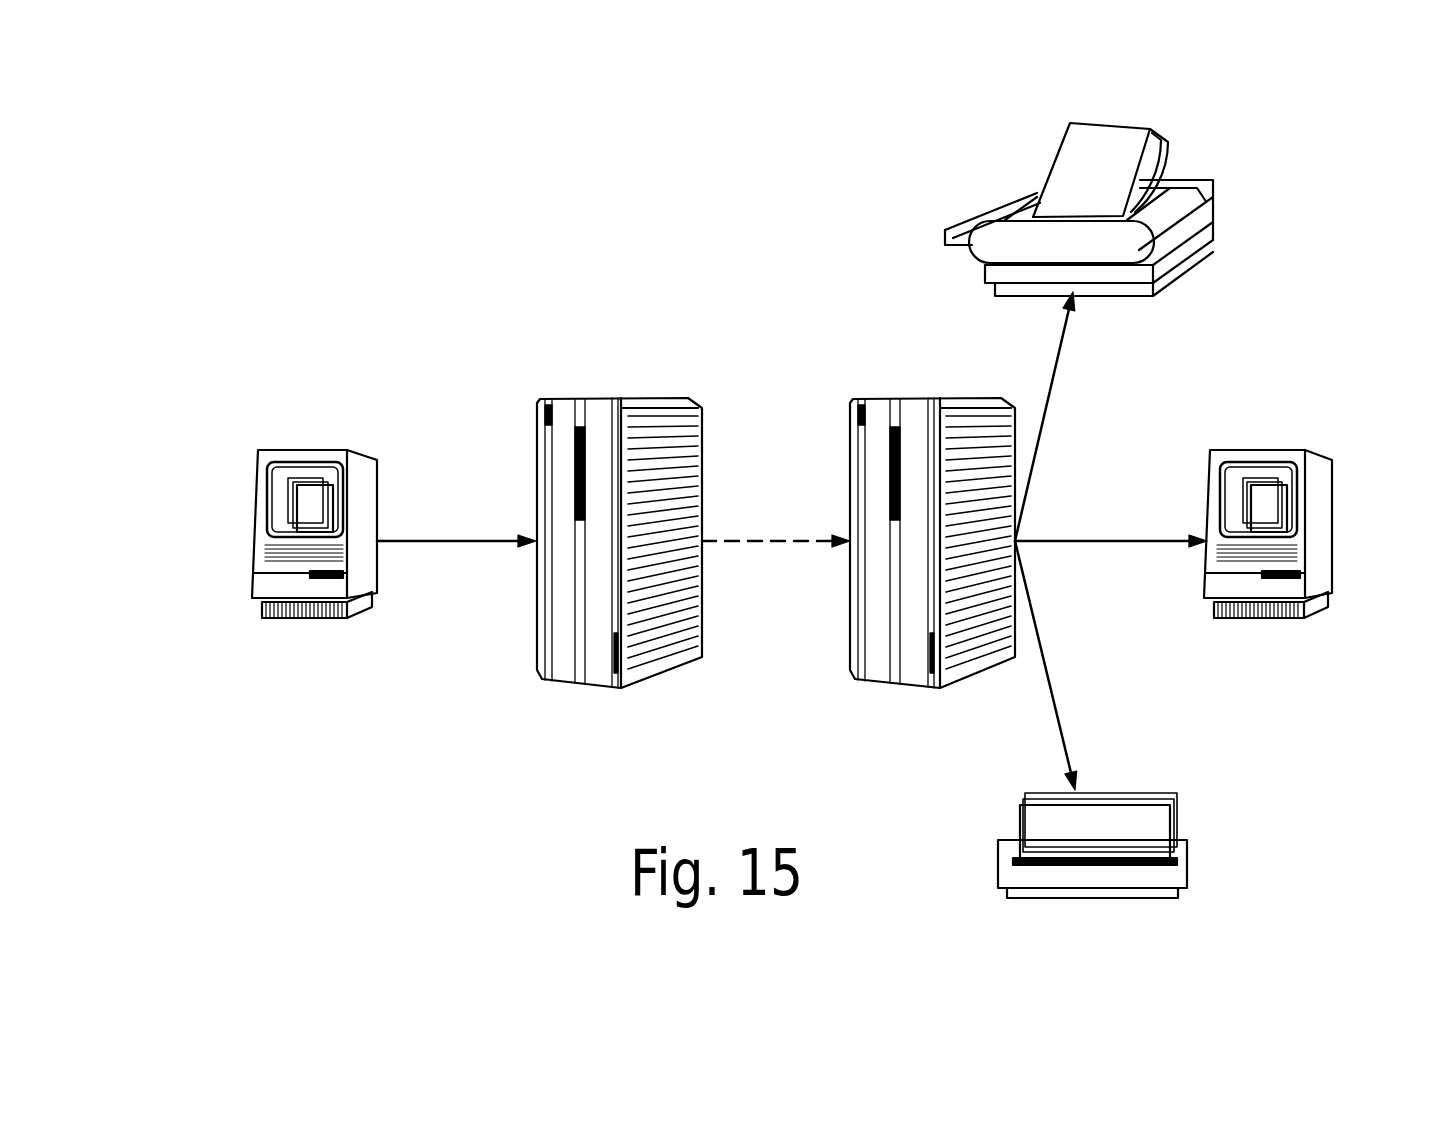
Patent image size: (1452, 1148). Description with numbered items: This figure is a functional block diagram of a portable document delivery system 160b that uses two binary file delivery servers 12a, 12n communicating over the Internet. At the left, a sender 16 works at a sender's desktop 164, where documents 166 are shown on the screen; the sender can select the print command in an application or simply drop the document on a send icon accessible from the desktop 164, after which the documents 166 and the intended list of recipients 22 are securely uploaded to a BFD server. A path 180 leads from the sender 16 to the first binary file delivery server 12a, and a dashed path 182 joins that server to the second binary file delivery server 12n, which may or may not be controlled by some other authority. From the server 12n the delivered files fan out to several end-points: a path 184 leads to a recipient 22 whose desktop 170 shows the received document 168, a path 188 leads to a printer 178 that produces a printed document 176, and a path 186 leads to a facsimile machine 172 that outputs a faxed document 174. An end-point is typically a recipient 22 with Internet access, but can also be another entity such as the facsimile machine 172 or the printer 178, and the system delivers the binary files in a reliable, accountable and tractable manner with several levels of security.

The portable document delivery system 160b is at (512, 278).
The sender 16 is at (330, 450).
The sender's desktop 164 is at (283, 473).
The documents 166 is at (303, 505).
The transmission from sender to server 180 is at (457, 540).
The binary file delivery server 12a is at (563, 399).
The transmission between servers 182 is at (767, 540).
The binary file delivery server 12n is at (918, 399).
The transmission to recipient 184 is at (1110, 540).
The transmission to fax machine 186 is at (1053, 697).
The transmission to printer 188 is at (1046, 407).
The recipient 22 is at (1225, 450).
The recipient's desktop 170 is at (1285, 473).
The document on recipient display 168 is at (1275, 507).
The printed document 176 is at (1062, 142).
The printer 178 is at (993, 204).
The facsimile machine 172 is at (998, 842).
The faxed document 174 is at (1177, 793).